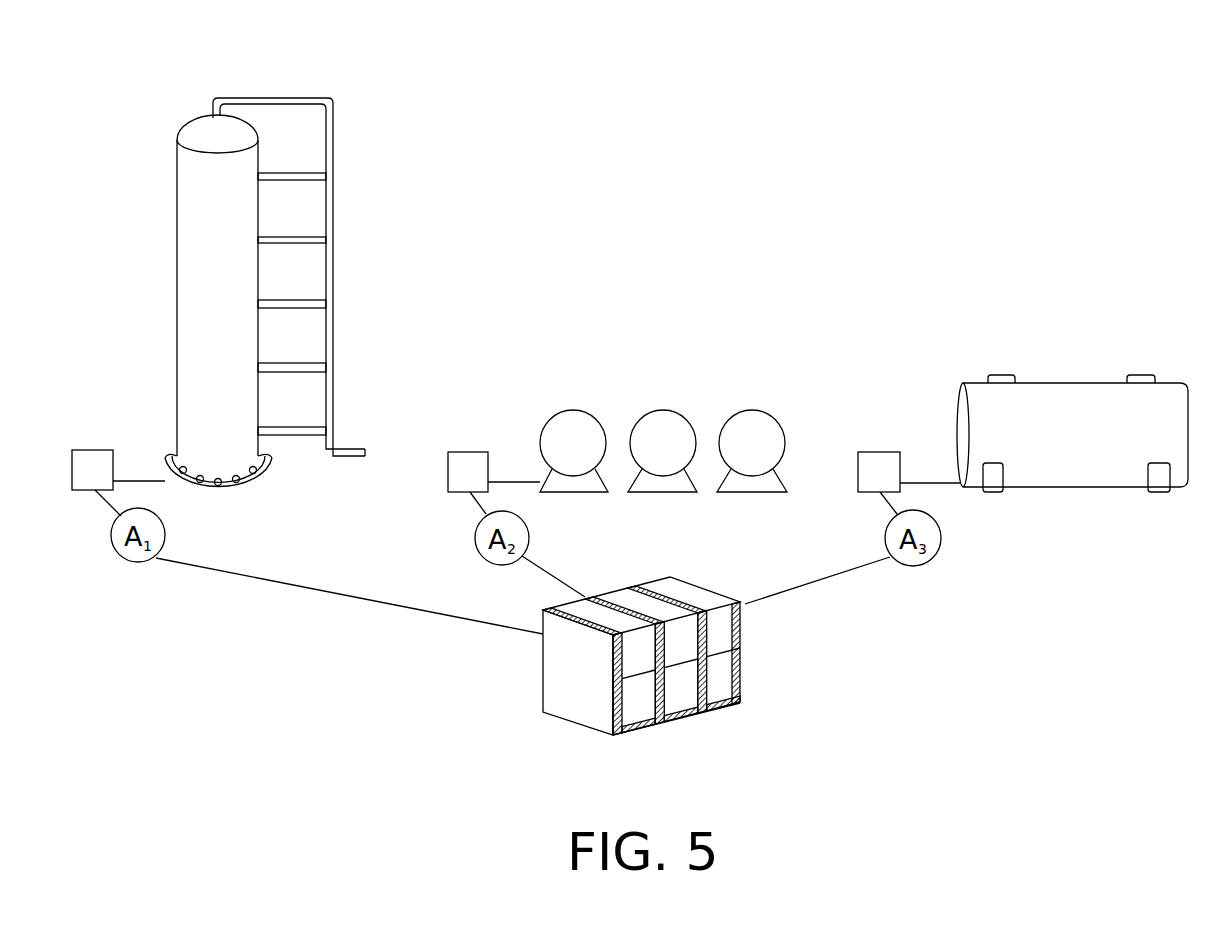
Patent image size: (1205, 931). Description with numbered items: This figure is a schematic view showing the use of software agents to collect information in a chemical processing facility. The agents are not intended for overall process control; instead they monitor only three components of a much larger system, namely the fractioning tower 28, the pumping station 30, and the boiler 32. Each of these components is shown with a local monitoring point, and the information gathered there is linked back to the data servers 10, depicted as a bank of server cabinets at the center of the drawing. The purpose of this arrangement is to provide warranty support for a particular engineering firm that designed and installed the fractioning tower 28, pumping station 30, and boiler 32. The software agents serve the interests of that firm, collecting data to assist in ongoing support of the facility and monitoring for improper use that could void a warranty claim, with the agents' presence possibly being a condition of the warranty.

The data servers 10 is at (543, 712).
The fractioning tower 28 is at (177, 140).
The pumping station 30 is at (665, 410).
The boiler 32 is at (1075, 380).